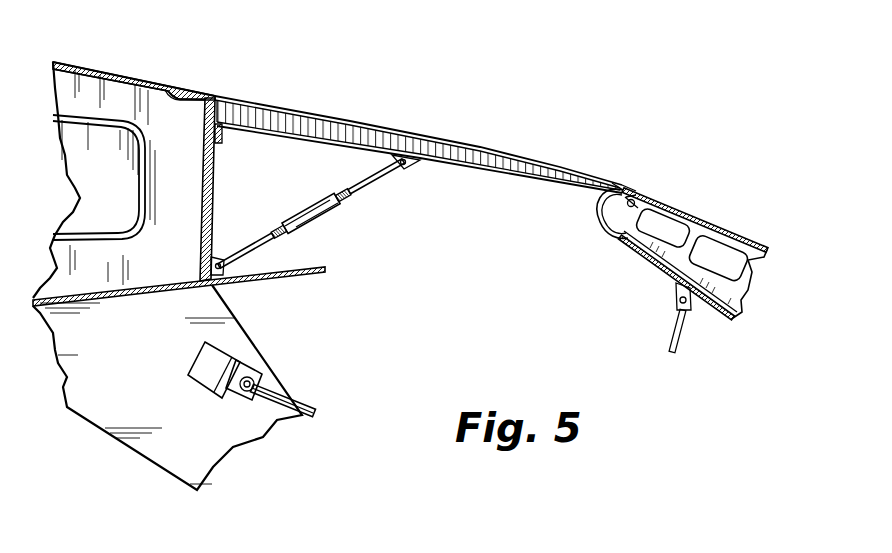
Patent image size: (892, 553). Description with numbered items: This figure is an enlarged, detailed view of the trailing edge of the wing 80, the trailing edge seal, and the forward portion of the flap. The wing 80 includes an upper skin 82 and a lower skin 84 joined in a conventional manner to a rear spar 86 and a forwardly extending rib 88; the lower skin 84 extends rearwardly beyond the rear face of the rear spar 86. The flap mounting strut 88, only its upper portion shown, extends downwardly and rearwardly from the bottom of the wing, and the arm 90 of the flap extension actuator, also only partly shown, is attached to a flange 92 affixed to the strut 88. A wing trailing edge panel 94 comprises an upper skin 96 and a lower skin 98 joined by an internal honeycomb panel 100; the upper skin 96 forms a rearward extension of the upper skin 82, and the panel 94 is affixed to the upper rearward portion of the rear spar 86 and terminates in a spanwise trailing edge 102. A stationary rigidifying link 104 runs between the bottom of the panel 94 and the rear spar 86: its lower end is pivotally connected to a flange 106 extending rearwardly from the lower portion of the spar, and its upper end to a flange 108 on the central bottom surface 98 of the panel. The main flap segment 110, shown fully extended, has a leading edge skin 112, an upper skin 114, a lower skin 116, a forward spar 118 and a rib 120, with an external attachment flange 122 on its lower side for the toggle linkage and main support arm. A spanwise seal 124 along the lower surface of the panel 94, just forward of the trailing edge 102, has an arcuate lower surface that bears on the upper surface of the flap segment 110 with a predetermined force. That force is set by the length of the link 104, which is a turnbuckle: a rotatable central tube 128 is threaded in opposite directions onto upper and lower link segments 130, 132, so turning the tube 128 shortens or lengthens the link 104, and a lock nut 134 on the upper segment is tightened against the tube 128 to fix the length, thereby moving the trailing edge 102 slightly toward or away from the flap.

The wing 80 is at (137, 60).
The upper skin 82 is at (172, 86).
The lower skin 84 is at (143, 293).
The rear spar 86 is at (212, 177).
The flap mounting strut 88 is at (87, 83).
The arm 90 is at (295, 407).
The flange 92 is at (212, 353).
The wing trailing edge panel 94 is at (418, 132).
The upper skin 96 is at (325, 111).
The lower skin 98 is at (303, 139).
The internal honeycomb panel 100 is at (513, 162).
The spanwise trailing edge 102 is at (627, 197).
The rigidifying link 104 is at (358, 211).
The flange 106 is at (215, 264).
The flange 108 is at (414, 162).
The main flap segment 110 is at (668, 246).
The leading edge skin 112 is at (601, 214).
The upper skin 114 is at (693, 207).
The lower skin 116 is at (651, 254).
The forward spar 118 is at (638, 197).
The rib 120 is at (750, 247).
The external attachment flange 122 is at (661, 270).
The spanwise seal 124 is at (605, 186).
The rotatable central tube 128 is at (298, 222).
The upper link segment 130 is at (367, 189).
The lower link segment 132 is at (262, 243).
The lock nut 134 is at (336, 194).